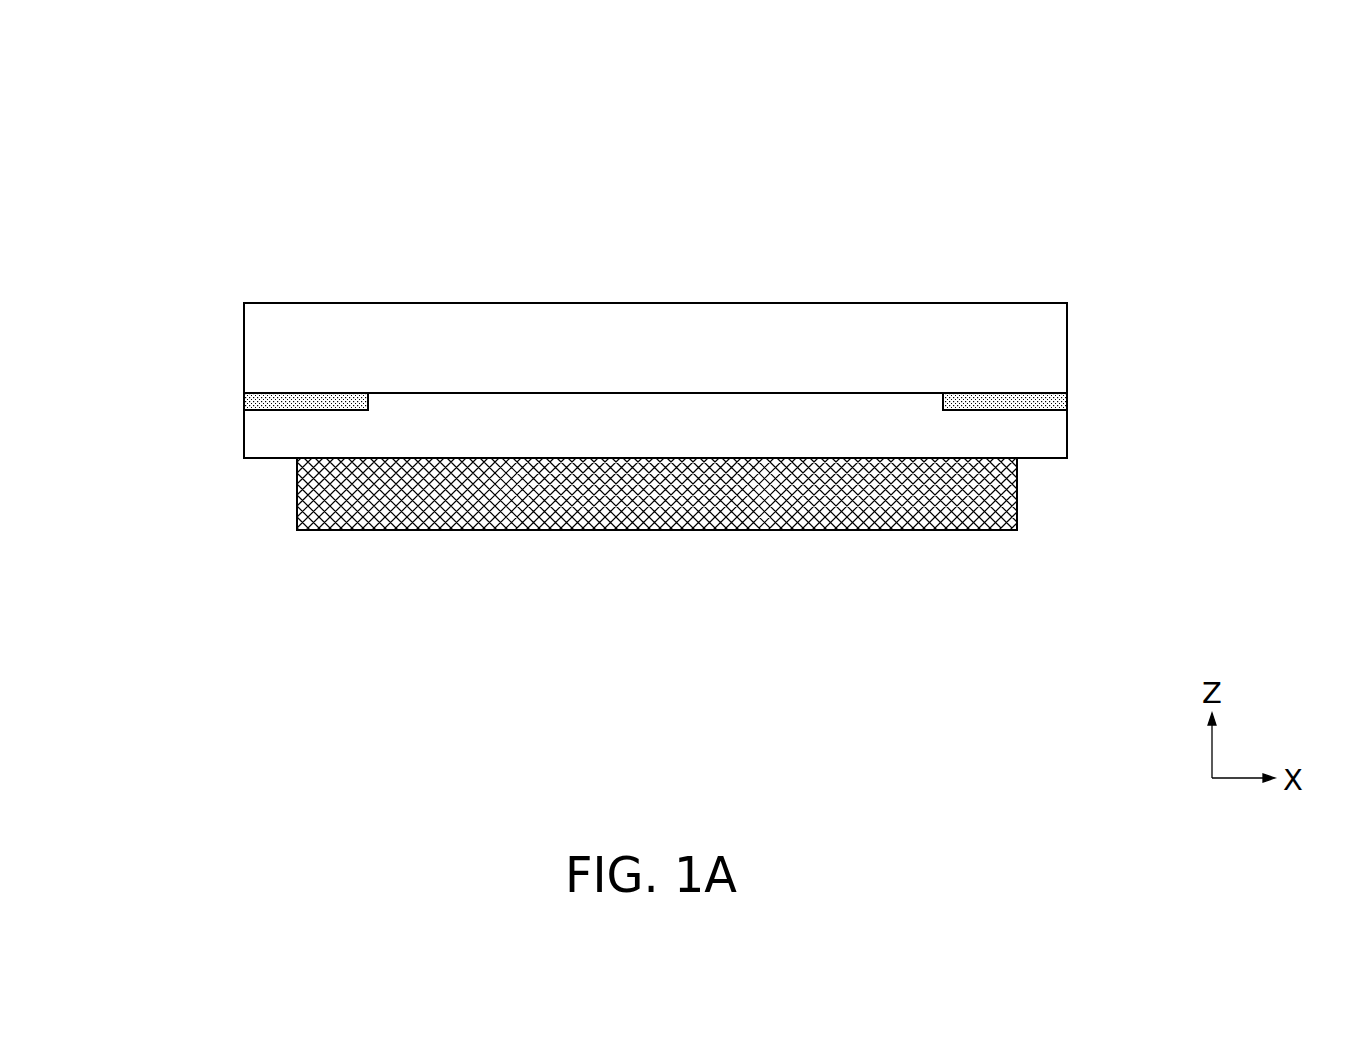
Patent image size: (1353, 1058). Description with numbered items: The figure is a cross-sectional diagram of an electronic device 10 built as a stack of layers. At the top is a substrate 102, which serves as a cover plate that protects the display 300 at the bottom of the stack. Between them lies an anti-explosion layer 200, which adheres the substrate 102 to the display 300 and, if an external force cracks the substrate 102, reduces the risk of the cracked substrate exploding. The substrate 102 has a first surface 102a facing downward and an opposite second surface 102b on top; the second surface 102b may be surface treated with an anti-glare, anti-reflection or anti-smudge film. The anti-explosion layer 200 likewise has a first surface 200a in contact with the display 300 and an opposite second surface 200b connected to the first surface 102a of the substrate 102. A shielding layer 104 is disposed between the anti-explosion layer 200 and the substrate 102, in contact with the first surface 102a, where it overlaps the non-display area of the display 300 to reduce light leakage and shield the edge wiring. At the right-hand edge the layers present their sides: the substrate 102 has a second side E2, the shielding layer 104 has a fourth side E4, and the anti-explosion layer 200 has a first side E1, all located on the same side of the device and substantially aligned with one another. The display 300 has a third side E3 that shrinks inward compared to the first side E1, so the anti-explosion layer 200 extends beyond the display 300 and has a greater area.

The electronic device 10 is at (133, 86).
The substrate 102 is at (268, 347).
The first surface 102a is at (415, 409).
The second surface 102b is at (415, 290).
The shielding layer 104 is at (250, 402).
The anti-explosion layer 200 is at (268, 438).
The first surface 200a is at (871, 472).
The second surface 200b is at (871, 382).
The display 300 is at (297, 500).
The first side E1 is at (1082, 438).
The second side E2 is at (1082, 349).
The third side E3 is at (1032, 495).
The fourth side E4 is at (1082, 403).